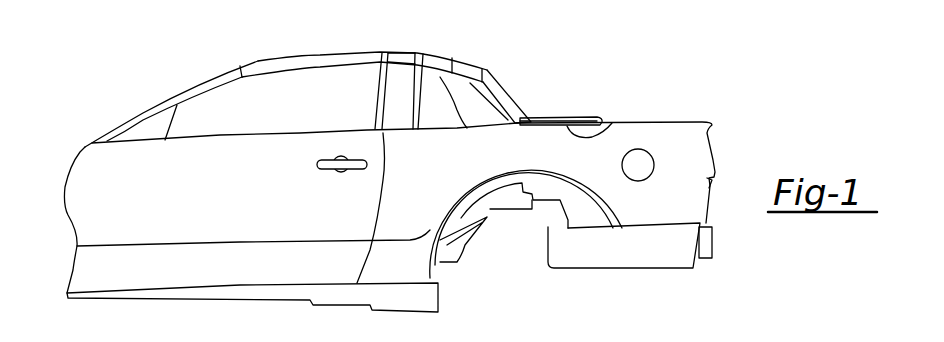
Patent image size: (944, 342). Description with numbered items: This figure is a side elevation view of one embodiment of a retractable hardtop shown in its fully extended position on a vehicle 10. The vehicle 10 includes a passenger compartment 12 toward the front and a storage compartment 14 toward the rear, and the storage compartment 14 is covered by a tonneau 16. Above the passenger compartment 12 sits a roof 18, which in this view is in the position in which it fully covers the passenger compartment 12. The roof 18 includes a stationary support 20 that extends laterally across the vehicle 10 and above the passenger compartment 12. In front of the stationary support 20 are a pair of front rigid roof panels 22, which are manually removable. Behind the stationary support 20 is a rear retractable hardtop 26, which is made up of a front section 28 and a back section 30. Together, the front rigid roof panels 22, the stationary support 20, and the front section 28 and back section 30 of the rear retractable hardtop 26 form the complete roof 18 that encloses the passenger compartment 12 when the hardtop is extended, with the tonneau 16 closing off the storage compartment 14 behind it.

The vehicle 10 is at (110, 72).
The passenger compartment 12 is at (242, 130).
The storage compartment 14 is at (577, 131).
The tonneau 16 is at (563, 113).
The roof 18 is at (250, 53).
The stationary support 20 is at (400, 57).
The front rigid roof panels 22 is at (283, 56).
The rear retractable hardtop 26 is at (504, 72).
The front section 28 is at (447, 63).
The back section 30 is at (489, 103).